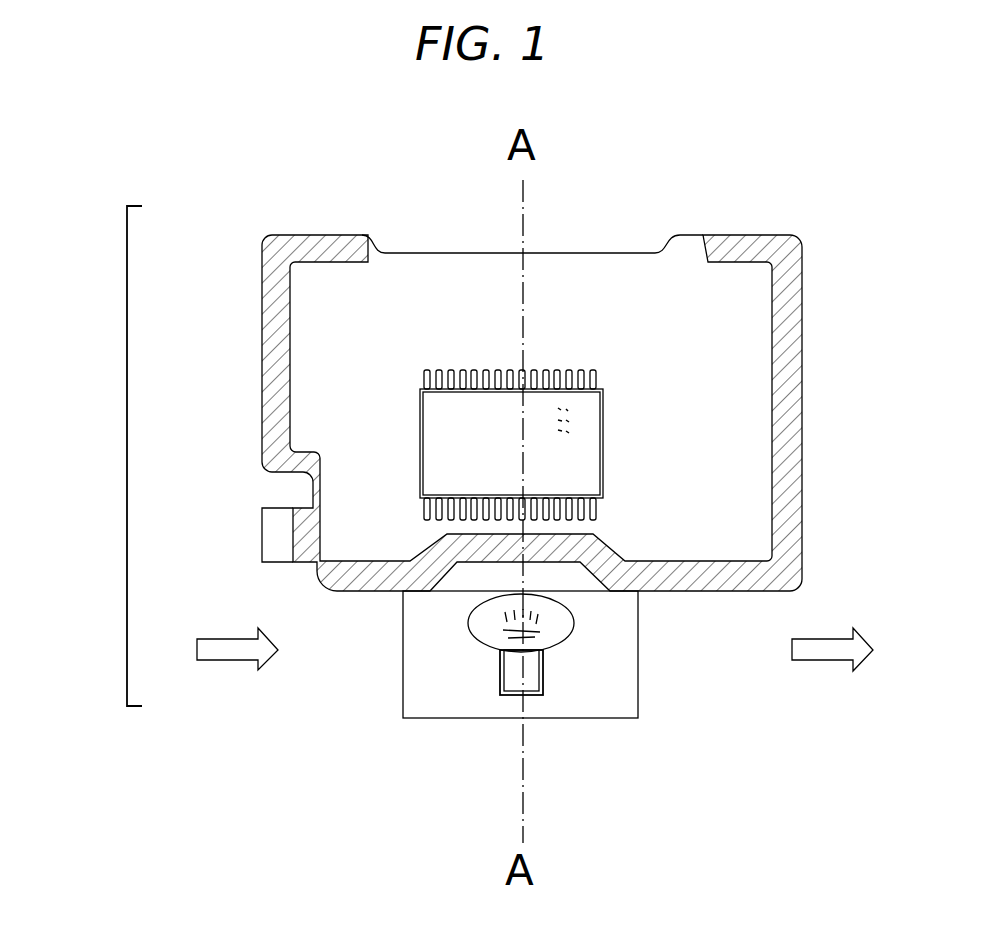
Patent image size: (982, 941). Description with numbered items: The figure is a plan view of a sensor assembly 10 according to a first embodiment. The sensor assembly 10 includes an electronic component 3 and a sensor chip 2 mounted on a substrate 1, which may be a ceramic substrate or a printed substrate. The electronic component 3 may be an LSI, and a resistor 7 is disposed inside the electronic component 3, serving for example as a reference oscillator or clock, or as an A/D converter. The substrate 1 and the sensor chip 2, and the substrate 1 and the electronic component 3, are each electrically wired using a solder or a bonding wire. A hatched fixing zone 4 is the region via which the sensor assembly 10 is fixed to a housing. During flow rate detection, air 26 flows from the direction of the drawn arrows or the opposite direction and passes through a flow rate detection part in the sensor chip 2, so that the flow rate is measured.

The substrate 1 is at (698, 497).
The sensor chip 2 is at (507, 673).
The electronic component 3 is at (482, 415).
The fixing zone 4 is at (747, 247).
The resistor 7 is at (565, 410).
The sensor assembly 10 is at (127, 455).
The air 26 is at (255, 660).